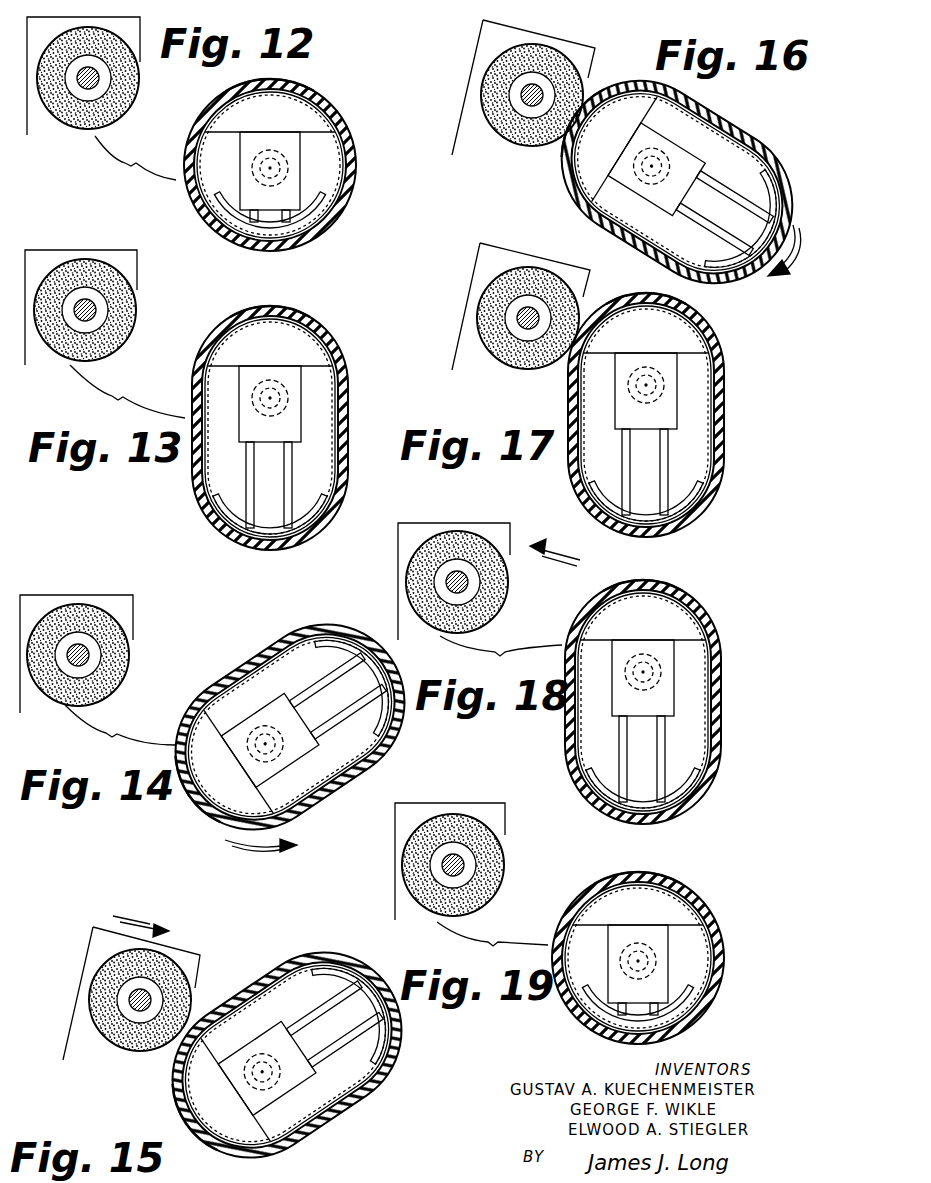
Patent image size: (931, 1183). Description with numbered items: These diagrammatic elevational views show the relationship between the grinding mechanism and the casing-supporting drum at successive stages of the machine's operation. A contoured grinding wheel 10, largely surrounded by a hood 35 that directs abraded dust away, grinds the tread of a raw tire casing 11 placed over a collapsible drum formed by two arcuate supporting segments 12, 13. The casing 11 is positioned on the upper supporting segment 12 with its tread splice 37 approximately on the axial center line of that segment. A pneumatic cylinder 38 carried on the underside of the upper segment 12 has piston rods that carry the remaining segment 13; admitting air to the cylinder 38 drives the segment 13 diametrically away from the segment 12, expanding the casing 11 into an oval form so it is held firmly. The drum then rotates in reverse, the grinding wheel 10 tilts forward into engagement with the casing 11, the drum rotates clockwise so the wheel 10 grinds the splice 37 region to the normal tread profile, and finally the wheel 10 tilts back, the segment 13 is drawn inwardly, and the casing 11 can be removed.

In FIG. 12, the grinding wheel 10 is at (82, 128).
In FIG. 13, the grinding wheel 10 is at (133, 300).
In FIG. 14, the grinding wheel 10 is at (128, 648).
In FIG. 15, the grinding wheel 10 is at (190, 983).
In FIG. 16, the grinding wheel 10 is at (520, 150).
In FIG. 17, the grinding wheel 10 is at (528, 318).
In FIG. 18, the grinding wheel 10 is at (506, 596).
In FIG. 19, the grinding wheel 10 is at (503, 860).
In FIG. 12, the tire casing 11 is at (343, 118).
In FIG. 13, the tire casing 11 is at (343, 356).
In FIG. 14, the tire casing 11 is at (332, 642).
In FIG. 15, the tire casing 11 is at (333, 970).
In FIG. 16, the tire casing 11 is at (727, 133).
In FIG. 17, the tire casing 11 is at (728, 348).
In FIG. 18, the tire casing 11 is at (714, 628).
In FIG. 19, the tire casing 11 is at (694, 894).
In FIG. 12, the upper supporting segment 12 is at (321, 98).
In FIG. 13, the upper supporting segment 12 is at (318, 332).
In FIG. 14, the upper supporting segment 12 is at (210, 808).
In FIG. 15, the upper supporting segment 12 is at (212, 1138).
In FIG. 16, the upper supporting segment 12 is at (682, 95).
In FIG. 17, the upper supporting segment 12 is at (696, 330).
In FIG. 18, the upper supporting segment 12 is at (679, 600).
In FIG. 19, the upper supporting segment 12 is at (708, 916).
In FIG. 12, the supporting segment 13 is at (322, 205).
In FIG. 13, the supporting segment 13 is at (320, 520).
In FIG. 14, the supporting segment 13 is at (388, 742).
In FIG. 15, the supporting segment 13 is at (390, 1066).
In FIG. 16, the supporting segment 13 is at (774, 166).
In FIG. 17, the supporting segment 13 is at (710, 506).
In FIG. 18, the supporting segment 13 is at (718, 772).
In FIG. 19, the supporting segment 13 is at (716, 978).
In FIG. 12, the hood 35 is at (142, 62).
In FIG. 13, the hood 35 is at (103, 250).
In FIG. 14, the hood 35 is at (86, 595).
In FIG. 15, the hood 35 is at (108, 927).
In FIG. 16, the hood 35 is at (534, 34).
In FIG. 17, the hood 35 is at (496, 243).
In FIG. 18, the hood 35 is at (423, 523).
In FIG. 19, the hood 35 is at (445, 803).
In FIG. 12, the tread splice 37 is at (270, 80).
In FIG. 13, the tread splice 37 is at (260, 310).
In FIG. 14, the tread splice 37 is at (188, 795).
In FIG. 15, the tread splice 37 is at (178, 1118).
In FIG. 16, the tread splice 37 is at (592, 100).
In FIG. 17, the tread splice 37 is at (648, 298).
In FIG. 18, the tread splice 37 is at (640, 588).
In FIG. 19, the tread splice 37 is at (640, 875).
In FIG. 12, the pneumatic cylinder 38 is at (292, 172).
In FIG. 13, the pneumatic cylinder 38 is at (295, 432).
In FIG. 14, the pneumatic cylinder 38 is at (250, 722).
In FIG. 15, the pneumatic cylinder 38 is at (247, 1050).
In FIG. 16, the pneumatic cylinder 38 is at (682, 162).
In FIG. 17, the pneumatic cylinder 38 is at (668, 406).
In FIG. 18, the pneumatic cylinder 38 is at (662, 706).
In FIG. 19, the pneumatic cylinder 38 is at (660, 948).